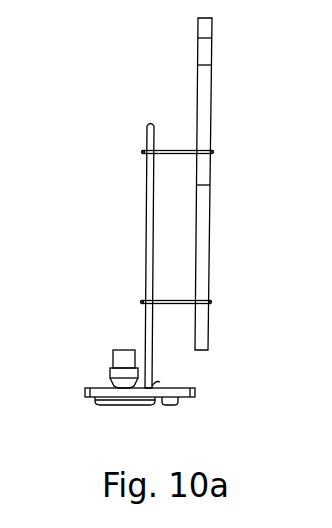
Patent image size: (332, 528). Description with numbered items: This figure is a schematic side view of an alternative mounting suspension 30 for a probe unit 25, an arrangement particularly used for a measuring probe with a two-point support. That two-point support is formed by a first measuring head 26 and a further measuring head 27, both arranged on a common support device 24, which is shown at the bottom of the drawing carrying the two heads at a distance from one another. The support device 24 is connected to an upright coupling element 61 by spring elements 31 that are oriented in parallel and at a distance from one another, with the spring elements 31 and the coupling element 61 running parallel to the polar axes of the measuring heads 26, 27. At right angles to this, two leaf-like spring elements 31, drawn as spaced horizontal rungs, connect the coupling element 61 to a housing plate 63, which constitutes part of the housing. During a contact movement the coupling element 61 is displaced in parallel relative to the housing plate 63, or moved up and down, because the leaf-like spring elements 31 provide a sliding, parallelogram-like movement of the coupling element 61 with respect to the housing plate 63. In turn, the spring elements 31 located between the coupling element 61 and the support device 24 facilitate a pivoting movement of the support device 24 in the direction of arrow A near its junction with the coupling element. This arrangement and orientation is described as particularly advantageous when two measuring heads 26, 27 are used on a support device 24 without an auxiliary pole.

The probe unit 25 is at (149, 203).
The mounting suspension 30 is at (145, 375).
The coupling element 61 is at (147, 180).
The housing plate 63 is at (205, 88).
The spring elements 31 is at (178, 150).
The support device 24 is at (195, 393).
The first measuring head 26 is at (169, 406).
The further measuring head 27 is at (123, 416).
The arrow A is at (153, 386).